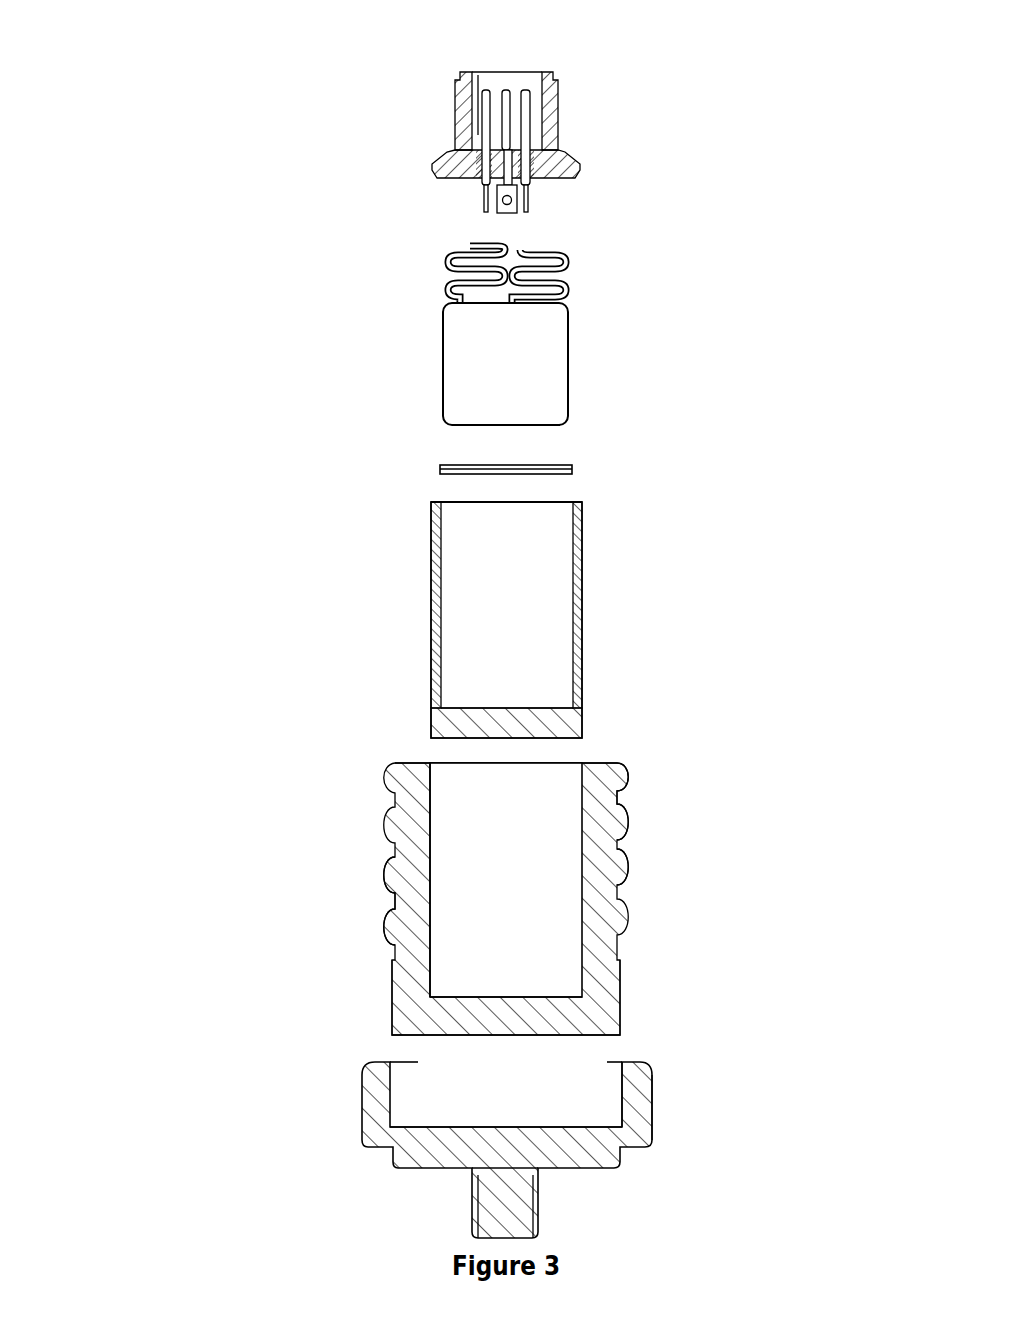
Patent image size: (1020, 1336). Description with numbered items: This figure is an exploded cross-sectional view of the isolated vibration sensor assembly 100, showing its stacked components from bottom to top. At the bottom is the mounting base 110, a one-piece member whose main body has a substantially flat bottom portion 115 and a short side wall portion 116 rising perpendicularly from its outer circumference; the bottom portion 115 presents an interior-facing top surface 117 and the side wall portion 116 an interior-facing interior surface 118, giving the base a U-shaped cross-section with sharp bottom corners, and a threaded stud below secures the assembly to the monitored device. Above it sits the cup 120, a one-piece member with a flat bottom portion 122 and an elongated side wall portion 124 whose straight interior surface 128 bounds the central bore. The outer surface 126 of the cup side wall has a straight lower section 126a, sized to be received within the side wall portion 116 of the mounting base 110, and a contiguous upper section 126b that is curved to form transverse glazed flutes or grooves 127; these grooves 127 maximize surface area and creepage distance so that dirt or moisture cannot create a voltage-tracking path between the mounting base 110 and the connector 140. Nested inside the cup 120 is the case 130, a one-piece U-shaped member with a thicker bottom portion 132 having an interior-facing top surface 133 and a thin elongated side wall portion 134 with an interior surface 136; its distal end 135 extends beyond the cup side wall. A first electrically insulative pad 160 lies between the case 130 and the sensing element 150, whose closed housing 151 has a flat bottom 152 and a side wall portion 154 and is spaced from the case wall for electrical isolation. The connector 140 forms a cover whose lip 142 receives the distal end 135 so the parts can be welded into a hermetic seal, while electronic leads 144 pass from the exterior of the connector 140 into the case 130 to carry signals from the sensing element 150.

The vibration sensor assembly 100 is at (160, 212).
The mounting base 110 is at (653, 1047).
The bottom portion 115 is at (603, 1168).
The side wall portion 116 is at (652, 1102).
The top surface 117 is at (502, 1128).
The interior surface 118 is at (617, 1093).
The cup 120 is at (335, 810).
The bottom portion 122 is at (503, 997).
The side wall portion 124 is at (410, 765).
The outer surface 126 is at (612, 803).
The lower section 126a is at (373, 988).
The upper section 126b is at (358, 903).
The grooves 127 is at (627, 877).
The interior surface 128 is at (430, 850).
The case 130 is at (408, 538).
The bottom portion 132 is at (580, 720).
The top surface 133 is at (472, 710).
The side wall portion 134 is at (578, 598).
The distal end 135 is at (582, 523).
The interior surface 136 is at (437, 595).
The connector 140 is at (587, 107).
The lip 142 is at (430, 173).
The electronic leads 144 is at (503, 90).
The sensing element 150 is at (587, 312).
The housing 151 is at (427, 347).
The bottom 152 is at (478, 424).
The side wall portion 154 is at (566, 388).
The first electrically insulative pad 160 is at (577, 467).